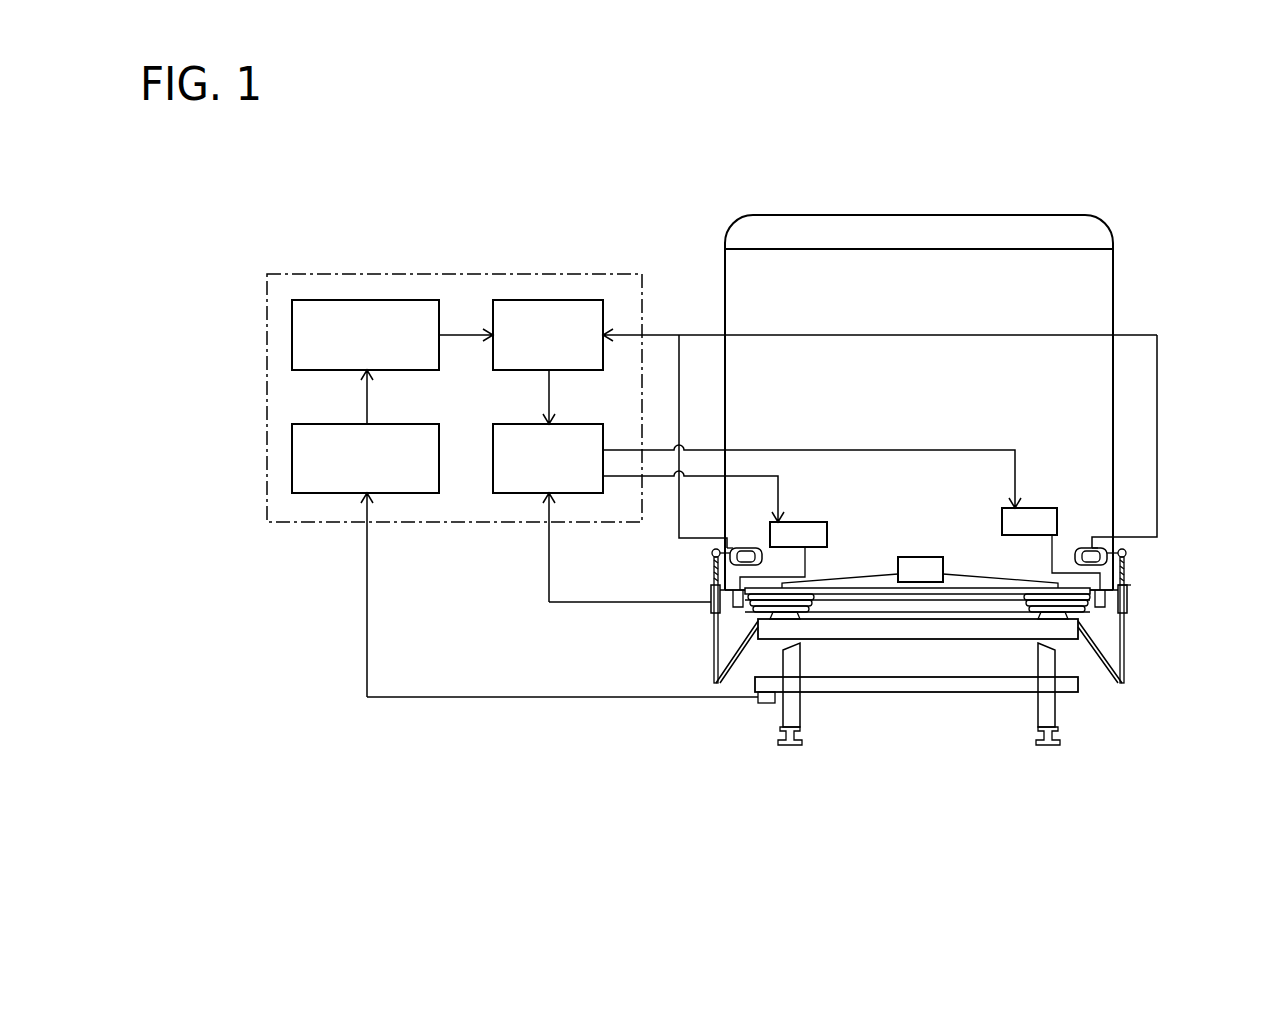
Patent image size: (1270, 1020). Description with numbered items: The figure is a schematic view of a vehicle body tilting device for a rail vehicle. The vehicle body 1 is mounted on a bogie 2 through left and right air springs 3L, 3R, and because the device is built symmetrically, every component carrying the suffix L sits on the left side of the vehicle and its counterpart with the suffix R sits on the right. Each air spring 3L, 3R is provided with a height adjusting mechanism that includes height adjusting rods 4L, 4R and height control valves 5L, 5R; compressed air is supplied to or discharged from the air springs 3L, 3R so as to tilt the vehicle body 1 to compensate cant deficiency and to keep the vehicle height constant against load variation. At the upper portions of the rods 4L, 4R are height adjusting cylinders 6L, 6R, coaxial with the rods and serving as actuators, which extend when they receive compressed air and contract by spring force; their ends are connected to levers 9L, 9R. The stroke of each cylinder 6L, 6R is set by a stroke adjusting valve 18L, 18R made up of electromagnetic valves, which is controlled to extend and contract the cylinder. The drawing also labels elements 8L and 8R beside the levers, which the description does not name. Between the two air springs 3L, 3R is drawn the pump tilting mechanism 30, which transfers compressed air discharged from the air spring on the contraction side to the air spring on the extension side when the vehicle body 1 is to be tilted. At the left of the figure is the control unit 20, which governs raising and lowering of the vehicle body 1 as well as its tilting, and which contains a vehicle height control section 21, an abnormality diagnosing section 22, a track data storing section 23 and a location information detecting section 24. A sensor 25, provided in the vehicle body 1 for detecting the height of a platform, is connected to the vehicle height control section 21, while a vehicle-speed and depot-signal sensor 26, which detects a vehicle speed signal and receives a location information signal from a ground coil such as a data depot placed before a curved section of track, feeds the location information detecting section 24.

The vehicle body 1 is at (1116, 262).
The bogie 2 is at (1080, 690).
The left air spring 3L is at (818, 612).
The right air spring 3R is at (1078, 662).
The left height adjusting rod 4L is at (713, 668).
The right height adjusting rod 4R is at (1126, 658).
The left height control valve 5L is at (765, 548).
The right height control valve 5R is at (1107, 546).
The left height adjusting cylinder 6L is at (711, 610).
The right height adjusting cylinder 6R is at (1128, 599).
The left detector 8L is at (742, 548).
The right detector 8R is at (1082, 548).
The left lever 9L is at (720, 549).
The right lever 9R is at (1122, 549).
The left stroke adjusting valve 18L is at (827, 530).
The right stroke adjusting valve 18R is at (1032, 508).
The control unit 20 is at (470, 272).
The vehicle height control section 21 is at (582, 424).
The abnormality diagnosing section 22 is at (585, 300).
The track data storing section 23 is at (318, 300).
The location information detecting section 24 is at (411, 424).
The sensor 25 is at (1132, 583).
The vehicle-speed and depot-signal sensor 26 is at (767, 703).
The pump tilting mechanism 30 is at (922, 557).